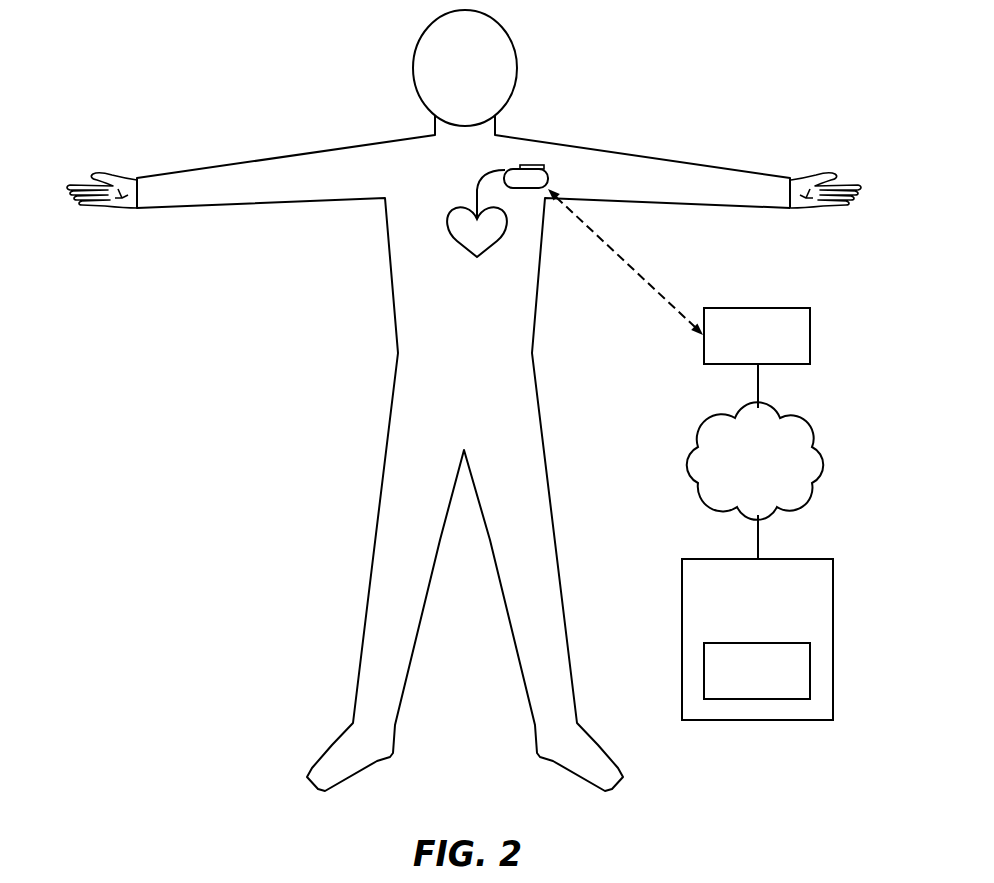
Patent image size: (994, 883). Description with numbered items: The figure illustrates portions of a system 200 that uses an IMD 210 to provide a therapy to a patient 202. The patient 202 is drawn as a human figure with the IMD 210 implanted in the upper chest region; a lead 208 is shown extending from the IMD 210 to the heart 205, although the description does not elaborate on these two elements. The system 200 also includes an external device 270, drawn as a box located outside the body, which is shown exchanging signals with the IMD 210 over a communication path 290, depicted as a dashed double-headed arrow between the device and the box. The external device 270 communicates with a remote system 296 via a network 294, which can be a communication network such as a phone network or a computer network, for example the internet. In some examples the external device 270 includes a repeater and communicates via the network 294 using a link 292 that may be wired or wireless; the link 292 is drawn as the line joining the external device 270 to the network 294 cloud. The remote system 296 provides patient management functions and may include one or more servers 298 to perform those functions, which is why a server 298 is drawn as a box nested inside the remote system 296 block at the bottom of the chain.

The system 200 is at (766, 29).
The patient 202 is at (390, 279).
The heart 205 is at (455, 243).
The lead 208 is at (485, 180).
The IMD 210 is at (532, 165).
The external device 270 is at (758, 308).
The communication link 290 is at (619, 258).
The link 292 is at (760, 384).
The network 294 is at (828, 458).
The remote system 296 is at (782, 559).
The servers 298 is at (760, 643).